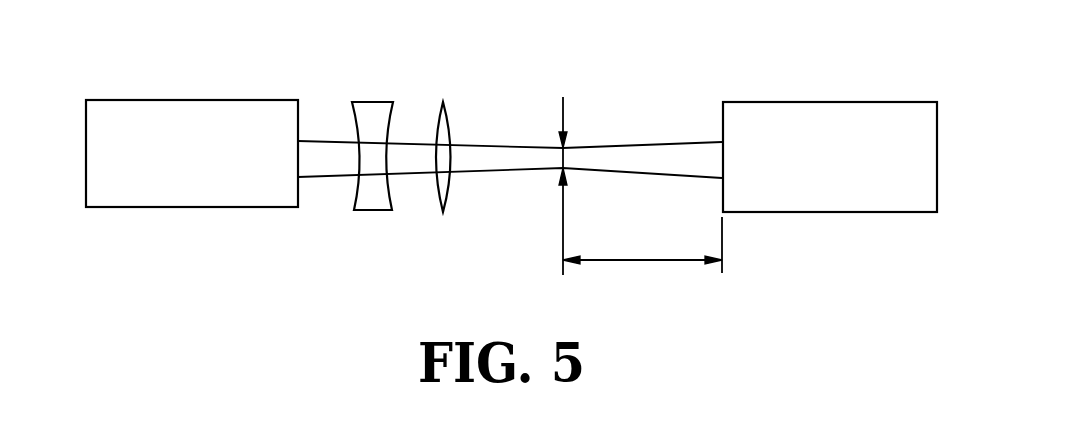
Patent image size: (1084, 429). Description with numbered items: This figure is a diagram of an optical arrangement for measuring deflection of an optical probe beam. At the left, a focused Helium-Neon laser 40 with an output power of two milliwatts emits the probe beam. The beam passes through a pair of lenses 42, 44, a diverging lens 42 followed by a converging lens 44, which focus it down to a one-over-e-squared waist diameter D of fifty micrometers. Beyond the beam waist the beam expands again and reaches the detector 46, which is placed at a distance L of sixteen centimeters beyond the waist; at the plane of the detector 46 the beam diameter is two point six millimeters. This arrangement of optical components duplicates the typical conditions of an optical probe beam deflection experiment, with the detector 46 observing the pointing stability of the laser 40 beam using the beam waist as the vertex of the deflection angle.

The Helium-Neon laser 40 is at (188, 100).
The lens 42 is at (367, 102).
The lens 44 is at (447, 113).
The detector 46 is at (827, 102).
The waist diameter D is at (566, 157).
The distance from beam waist to detector L is at (648, 260).